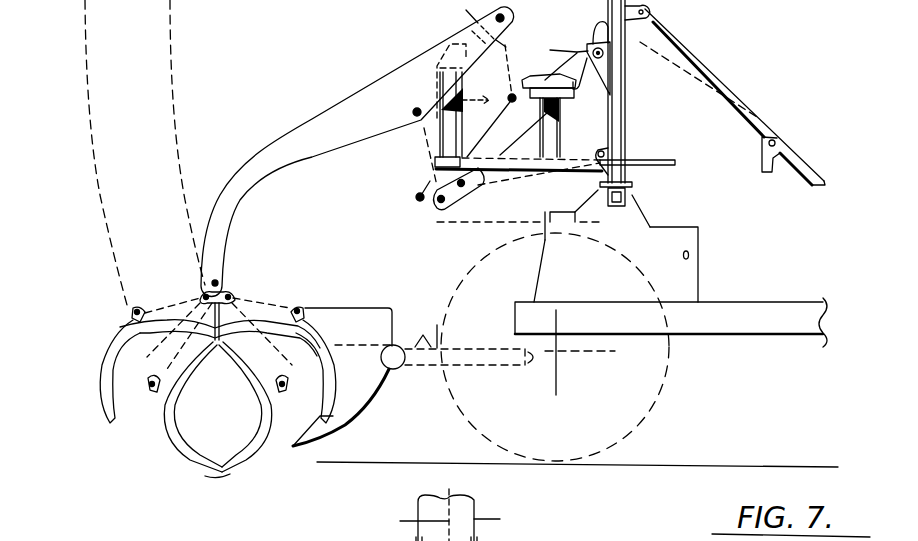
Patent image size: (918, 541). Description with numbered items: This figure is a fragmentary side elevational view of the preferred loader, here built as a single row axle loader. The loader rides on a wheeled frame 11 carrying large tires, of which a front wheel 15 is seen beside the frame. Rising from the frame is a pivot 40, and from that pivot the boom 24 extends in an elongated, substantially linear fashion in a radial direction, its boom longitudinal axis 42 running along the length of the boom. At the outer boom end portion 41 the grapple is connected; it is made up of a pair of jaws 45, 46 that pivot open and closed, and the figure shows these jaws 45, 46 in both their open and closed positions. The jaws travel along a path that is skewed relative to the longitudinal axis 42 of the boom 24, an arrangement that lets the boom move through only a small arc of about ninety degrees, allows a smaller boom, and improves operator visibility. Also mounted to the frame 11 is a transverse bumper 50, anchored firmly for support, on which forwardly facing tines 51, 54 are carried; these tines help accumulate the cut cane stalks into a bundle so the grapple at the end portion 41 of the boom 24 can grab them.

The frame 11 is at (735, 318).
The front wheel 15 is at (655, 413).
The boom 24 is at (377, 101).
The pivot 40 is at (632, 184).
The boom end portion 41 is at (226, 283).
The boom longitudinal axis 42 is at (400, 521).
The jaw 45 is at (104, 389).
The jaw 46 is at (335, 386).
The transverse bumper 50 is at (425, 376).
The tine 51 is at (363, 303).
The tine 54 is at (338, 322).